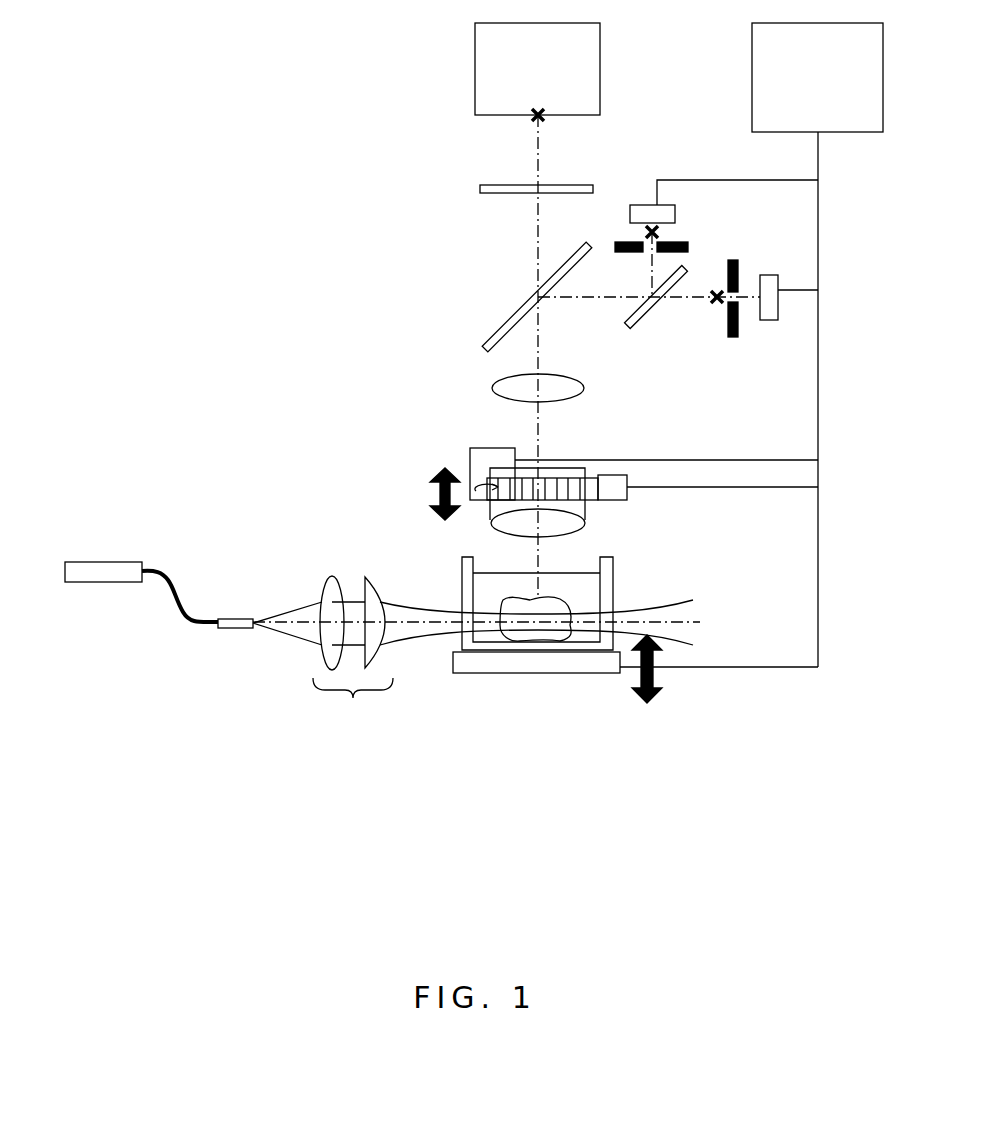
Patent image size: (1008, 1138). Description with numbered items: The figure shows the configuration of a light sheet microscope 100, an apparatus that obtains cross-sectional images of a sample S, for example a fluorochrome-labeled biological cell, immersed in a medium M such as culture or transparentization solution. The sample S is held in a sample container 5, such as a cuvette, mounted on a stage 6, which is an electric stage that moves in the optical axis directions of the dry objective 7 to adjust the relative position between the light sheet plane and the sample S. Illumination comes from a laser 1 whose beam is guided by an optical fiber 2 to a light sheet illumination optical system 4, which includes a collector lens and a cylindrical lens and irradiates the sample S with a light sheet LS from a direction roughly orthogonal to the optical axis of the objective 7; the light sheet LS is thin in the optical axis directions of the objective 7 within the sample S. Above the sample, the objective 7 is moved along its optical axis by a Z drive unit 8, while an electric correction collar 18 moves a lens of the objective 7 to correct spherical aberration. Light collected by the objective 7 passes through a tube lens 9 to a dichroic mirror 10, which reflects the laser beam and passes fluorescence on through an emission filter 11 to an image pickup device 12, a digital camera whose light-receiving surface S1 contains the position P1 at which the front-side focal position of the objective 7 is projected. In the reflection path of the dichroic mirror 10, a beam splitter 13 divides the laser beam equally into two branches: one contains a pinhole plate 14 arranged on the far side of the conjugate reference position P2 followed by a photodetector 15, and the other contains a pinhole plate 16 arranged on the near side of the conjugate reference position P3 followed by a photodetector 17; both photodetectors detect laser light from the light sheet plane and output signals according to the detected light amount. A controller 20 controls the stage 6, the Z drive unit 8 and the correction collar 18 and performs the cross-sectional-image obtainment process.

The light sheet microscope 100 is at (290, 121).
The laser 1 is at (103, 583).
The optical fiber 2 is at (180, 618).
The light sheet illumination optical system 4 is at (323, 655).
The sample container 5 is at (613, 593).
The stage 6 is at (455, 665).
The dry objective 7 is at (560, 468).
The Z drive unit 8 is at (470, 462).
The tube lens 9 is at (492, 386).
The dichroic mirror 10 is at (510, 306).
The emission filter 11 is at (480, 188).
The image pickup device 12 is at (475, 68).
The beam splitter 13 is at (648, 320).
The pinhole plate 14 is at (730, 338).
The photodetector 15 is at (770, 322).
The pinhole plate 16 is at (690, 246).
The photodetector 17 is at (638, 205).
The correction collar 18 is at (612, 475).
The controller 20 is at (752, 70).
The position on light-receiving surface P1 is at (536, 117).
The reference position P2 is at (712, 303).
The reference position P3 is at (646, 231).
The light-receiving surface S1 is at (556, 122).
The sample S is at (560, 603).
The medium M is at (503, 585).
The light sheet LS is at (410, 614).